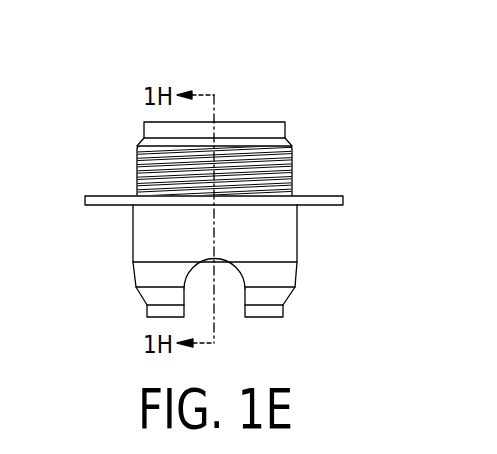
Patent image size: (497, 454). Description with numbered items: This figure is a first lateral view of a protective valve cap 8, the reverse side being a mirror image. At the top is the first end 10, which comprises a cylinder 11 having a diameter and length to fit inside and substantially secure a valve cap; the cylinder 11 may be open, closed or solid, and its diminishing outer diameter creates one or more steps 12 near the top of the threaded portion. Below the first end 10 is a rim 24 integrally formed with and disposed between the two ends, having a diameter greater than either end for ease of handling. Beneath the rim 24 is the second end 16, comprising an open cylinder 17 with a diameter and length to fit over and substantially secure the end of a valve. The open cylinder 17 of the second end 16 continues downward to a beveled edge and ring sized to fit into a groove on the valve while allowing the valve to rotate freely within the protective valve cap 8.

The protective valve cap 8 is at (294, 90).
The first end 10 is at (142, 122).
The cylinder 11 is at (238, 122).
The steps 12 is at (292, 142).
The second end 16 is at (297, 205).
The open cylinder 17 is at (133, 227).
The rim 24 is at (85, 198).